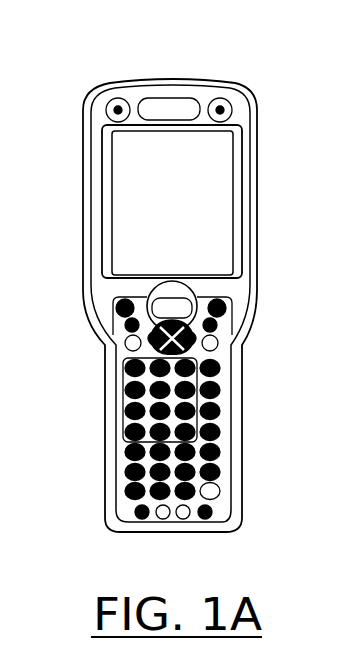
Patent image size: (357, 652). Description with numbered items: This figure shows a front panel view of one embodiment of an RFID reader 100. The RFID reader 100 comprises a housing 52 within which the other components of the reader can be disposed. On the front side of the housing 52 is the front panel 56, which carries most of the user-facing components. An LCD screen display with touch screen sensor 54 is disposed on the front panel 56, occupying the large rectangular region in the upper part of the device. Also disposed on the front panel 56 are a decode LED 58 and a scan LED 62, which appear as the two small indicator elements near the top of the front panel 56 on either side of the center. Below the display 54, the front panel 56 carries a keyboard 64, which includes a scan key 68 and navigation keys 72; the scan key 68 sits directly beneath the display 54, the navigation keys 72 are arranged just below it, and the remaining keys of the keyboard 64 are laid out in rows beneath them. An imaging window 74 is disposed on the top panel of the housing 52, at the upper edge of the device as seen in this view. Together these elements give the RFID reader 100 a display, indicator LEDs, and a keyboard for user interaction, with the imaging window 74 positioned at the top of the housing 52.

The RFID reader 100 is at (98, 53).
The housing 52 is at (259, 237).
The LCD screen display with touch screen sensor 54 is at (122, 203).
The front panel 56 is at (83, 147).
The decode LED 58 is at (107, 104).
The scan LED 62 is at (232, 104).
The keyboard 64 is at (128, 404).
The scan key 68 is at (150, 303).
The navigation keys 72 is at (143, 336).
The imaging window 74 is at (165, 80).